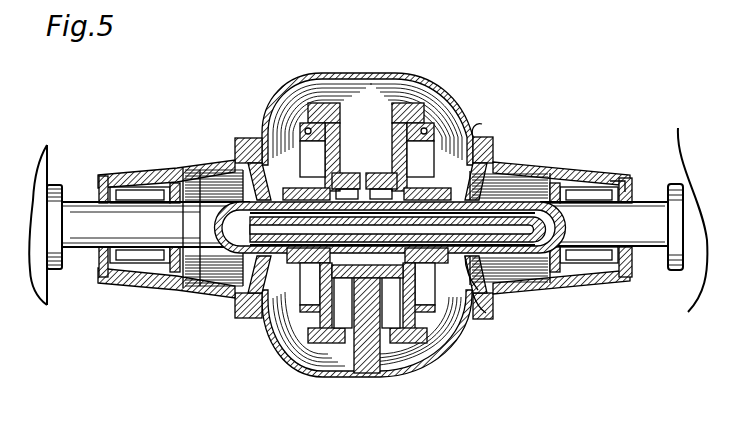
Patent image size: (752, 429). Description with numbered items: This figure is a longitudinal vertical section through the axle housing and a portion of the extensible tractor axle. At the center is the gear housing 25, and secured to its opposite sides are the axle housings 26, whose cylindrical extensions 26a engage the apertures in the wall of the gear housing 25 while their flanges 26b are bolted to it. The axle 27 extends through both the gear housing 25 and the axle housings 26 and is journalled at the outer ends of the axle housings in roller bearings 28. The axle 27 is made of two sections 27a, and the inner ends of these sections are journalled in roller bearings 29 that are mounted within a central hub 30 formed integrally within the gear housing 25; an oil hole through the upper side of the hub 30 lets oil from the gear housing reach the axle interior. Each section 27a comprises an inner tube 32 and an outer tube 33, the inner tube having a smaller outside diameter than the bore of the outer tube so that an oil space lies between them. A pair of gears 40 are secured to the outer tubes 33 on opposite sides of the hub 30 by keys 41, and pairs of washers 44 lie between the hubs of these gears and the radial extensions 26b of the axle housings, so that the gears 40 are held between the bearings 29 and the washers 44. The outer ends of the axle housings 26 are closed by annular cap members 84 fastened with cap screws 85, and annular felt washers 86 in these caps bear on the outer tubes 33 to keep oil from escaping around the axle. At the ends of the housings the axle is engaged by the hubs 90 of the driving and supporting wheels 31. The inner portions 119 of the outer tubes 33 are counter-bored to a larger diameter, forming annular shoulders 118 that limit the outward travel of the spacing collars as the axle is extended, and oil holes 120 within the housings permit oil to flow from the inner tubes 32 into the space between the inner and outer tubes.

The central gear housing 25 is at (424, 74).
The axle housing 26 is at (186, 166).
The cylindrical extension 26a is at (476, 138).
The flange 26b is at (247, 138).
The axle 27 is at (572, 216).
The axle section 27a is at (77, 216).
The roller bearing 28 is at (122, 266).
The roller bearing 29 is at (381, 185).
The central hub 30 is at (347, 190).
The driving and supporting wheel 31 is at (46, 300).
The inner tube 32 is at (244, 206).
The outer tube 33 is at (216, 205).
The gear 40 is at (318, 345).
The key 41 is at (308, 147).
The washer 44 is at (423, 147).
The annular cap member 84 is at (632, 190).
The cap screw 85 is at (632, 188).
The annular felt washer 86 is at (632, 196).
The hub 90 is at (678, 148).
The annular shoulder 118 is at (504, 270).
The inner portion 119 is at (493, 292).
The oil hole 120 is at (248, 282).